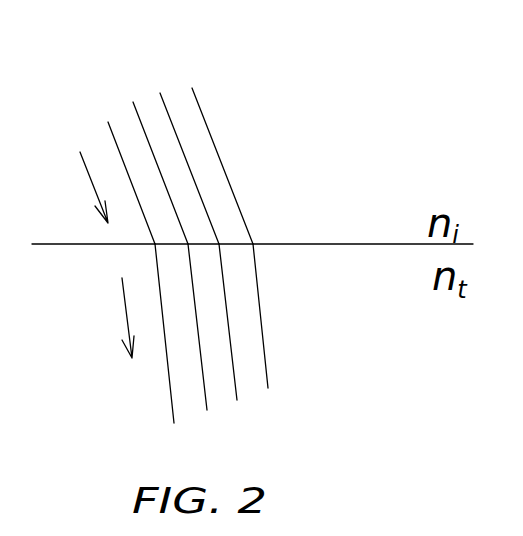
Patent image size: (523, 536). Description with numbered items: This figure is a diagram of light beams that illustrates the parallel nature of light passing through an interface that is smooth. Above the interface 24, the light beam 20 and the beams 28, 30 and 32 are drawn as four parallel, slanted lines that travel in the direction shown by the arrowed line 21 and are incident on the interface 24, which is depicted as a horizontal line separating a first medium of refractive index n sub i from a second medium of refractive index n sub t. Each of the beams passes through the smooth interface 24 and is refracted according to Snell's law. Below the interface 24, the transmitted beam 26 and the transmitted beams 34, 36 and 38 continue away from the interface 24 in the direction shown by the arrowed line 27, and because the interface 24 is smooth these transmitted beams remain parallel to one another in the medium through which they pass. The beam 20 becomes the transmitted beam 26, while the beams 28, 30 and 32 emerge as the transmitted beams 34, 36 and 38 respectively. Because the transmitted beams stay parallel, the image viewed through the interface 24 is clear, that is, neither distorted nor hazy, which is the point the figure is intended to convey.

The light beam 20 is at (117, 145).
The arrowed line 21 is at (82, 162).
The interface 24 is at (358, 244).
The transmitted beam 26 is at (169, 377).
The arrowed line 27 is at (123, 302).
The beam 28 is at (141, 122).
The beam 30 is at (165, 105).
The beam 32 is at (205, 122).
The transmitted beam 34 is at (208, 402).
The transmitted beam 36 is at (237, 390).
The transmitted beam 38 is at (265, 347).